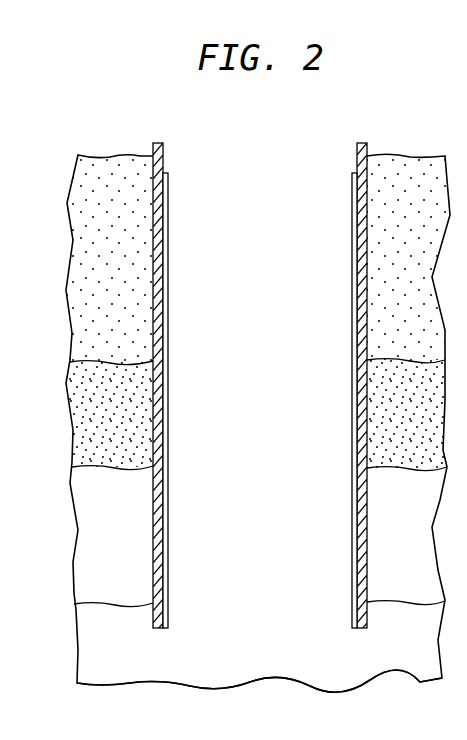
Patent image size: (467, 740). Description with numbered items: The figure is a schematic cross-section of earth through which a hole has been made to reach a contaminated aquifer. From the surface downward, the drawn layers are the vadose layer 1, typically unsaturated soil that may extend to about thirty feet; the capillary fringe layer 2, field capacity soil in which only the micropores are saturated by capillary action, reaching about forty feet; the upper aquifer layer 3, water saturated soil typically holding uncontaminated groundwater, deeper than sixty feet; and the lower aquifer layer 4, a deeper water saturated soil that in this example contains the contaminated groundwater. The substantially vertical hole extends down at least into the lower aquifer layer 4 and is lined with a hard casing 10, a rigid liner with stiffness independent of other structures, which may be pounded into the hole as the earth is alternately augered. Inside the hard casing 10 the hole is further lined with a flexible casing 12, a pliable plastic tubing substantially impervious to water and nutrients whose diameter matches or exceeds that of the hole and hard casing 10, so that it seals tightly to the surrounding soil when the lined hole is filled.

The vadose layer 1 is at (246, 260).
The capillary fringe layer 2 is at (245, 415).
The upper aquifer layer 3 is at (244, 562).
The lower aquifer layer 4 is at (242, 657).
The hard casing 10 is at (154, 152).
The flexible casing 12 is at (168, 192).